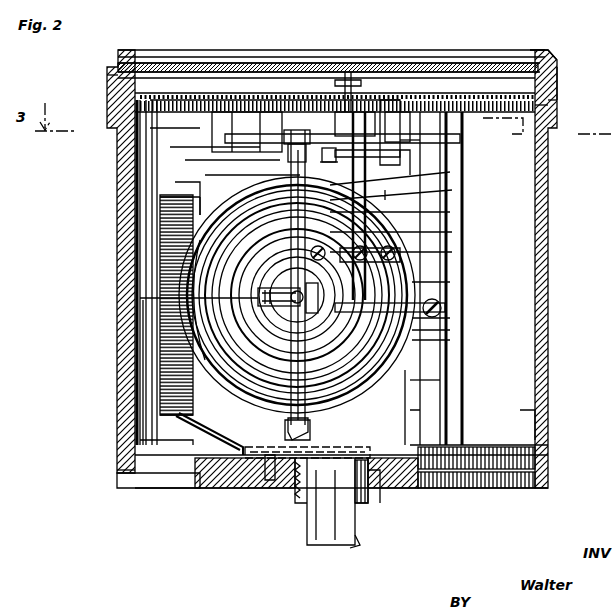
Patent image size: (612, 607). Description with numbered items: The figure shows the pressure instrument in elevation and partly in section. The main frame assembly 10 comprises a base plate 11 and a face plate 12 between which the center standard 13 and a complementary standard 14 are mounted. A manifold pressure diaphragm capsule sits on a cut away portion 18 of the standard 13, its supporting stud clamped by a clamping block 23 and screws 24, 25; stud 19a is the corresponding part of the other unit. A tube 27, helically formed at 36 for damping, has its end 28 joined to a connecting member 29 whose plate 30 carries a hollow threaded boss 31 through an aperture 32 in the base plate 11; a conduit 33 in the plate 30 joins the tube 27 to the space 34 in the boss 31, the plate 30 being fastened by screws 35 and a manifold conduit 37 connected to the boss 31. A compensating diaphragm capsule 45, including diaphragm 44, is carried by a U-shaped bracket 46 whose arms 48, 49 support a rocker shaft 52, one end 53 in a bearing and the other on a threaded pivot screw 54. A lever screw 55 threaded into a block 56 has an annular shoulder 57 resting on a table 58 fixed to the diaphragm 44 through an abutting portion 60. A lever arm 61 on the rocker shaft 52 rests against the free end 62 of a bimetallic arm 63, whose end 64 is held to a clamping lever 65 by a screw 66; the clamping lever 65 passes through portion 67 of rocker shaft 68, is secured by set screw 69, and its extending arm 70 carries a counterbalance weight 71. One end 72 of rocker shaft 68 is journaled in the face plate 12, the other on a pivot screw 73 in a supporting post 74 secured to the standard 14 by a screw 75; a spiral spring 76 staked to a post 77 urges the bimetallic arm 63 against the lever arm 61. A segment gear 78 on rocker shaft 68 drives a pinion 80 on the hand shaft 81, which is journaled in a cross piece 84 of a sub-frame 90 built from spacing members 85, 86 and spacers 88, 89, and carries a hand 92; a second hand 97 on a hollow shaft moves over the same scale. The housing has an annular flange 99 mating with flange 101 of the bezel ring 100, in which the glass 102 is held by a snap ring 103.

The main frame assembly 10 is at (472, 172).
The base plate 11 is at (195, 475).
The face plate 12 is at (531, 107).
The center frame standard 13 is at (440, 415).
The complementary standard 14 is at (440, 360).
The cut away portion 18 is at (375, 385).
The supporting stud 19a is at (200, 130).
The clamping block 23 is at (143, 365).
The screw 24 is at (157, 335).
The screw 25 is at (152, 274).
The tube 27 is at (165, 237).
The end of tube 28 is at (216, 475).
The connecting member 29 is at (300, 500).
The plate 30 is at (380, 490).
The hollow threaded boss 31 is at (370, 505).
The aperture 32 is at (295, 490).
The conduit 33 is at (285, 460).
The space 34 is at (316, 540).
The screws 35 is at (265, 465).
The helical shape 36 is at (140, 210).
The conduit 37 is at (360, 548).
The diaphragm 44 is at (347, 402).
The compensating diaphragm capsule 45 is at (440, 380).
The U-shaped bracket 46 is at (200, 182).
The bracket arm 48 is at (210, 175).
The bracket arm 49 is at (306, 432).
The rocker shaft 52 is at (200, 197).
The end of rocker shaft 53 is at (286, 420).
The threaded pivot screw 54 is at (296, 130).
The lever screw 55 is at (160, 390).
The block 56 is at (230, 380).
The annular shoulder 57 is at (140, 298).
The table 58 is at (278, 288).
The abutting portion 60 is at (312, 284).
The lever arm 61 is at (450, 340).
The free end 62 is at (450, 330).
The bimetallic arm 63 is at (445, 310).
The end of bimetallic arm 64 is at (464, 200).
The clamping lever 65 is at (465, 218).
The screw 66 is at (450, 212).
The portion of rocker shaft 67 is at (470, 258).
The rocker shaft 68 is at (448, 192).
The set screw 69 is at (452, 232).
The arm 70 is at (452, 252).
The counterbalance weight 71 is at (465, 240).
The end of rocker shaft 72 is at (366, 112).
The pivot screw 73 is at (450, 318).
The supporting post 74 is at (450, 282).
The screw 75 is at (442, 305).
The spiral spring 76 is at (400, 65).
The post 77 is at (315, 118).
The segment gear 78 is at (200, 160).
The pinion 80 is at (340, 145).
The hand shaft 81 is at (325, 156).
The cross piece 84 is at (402, 140).
The spacing member 85 is at (410, 155).
The spacing member 86 is at (190, 147).
The spacer member 88 is at (408, 123).
The spacer member 89 is at (245, 105).
The sub-frame 90 is at (400, 192).
The hand 92 is at (320, 75).
The hand 97 is at (238, 112).
The annular flange 99 is at (556, 100).
The bezel ring 100 is at (540, 53).
The flange 101 is at (558, 72).
The glass 102 is at (492, 62).
The snap ring 103 is at (107, 86).